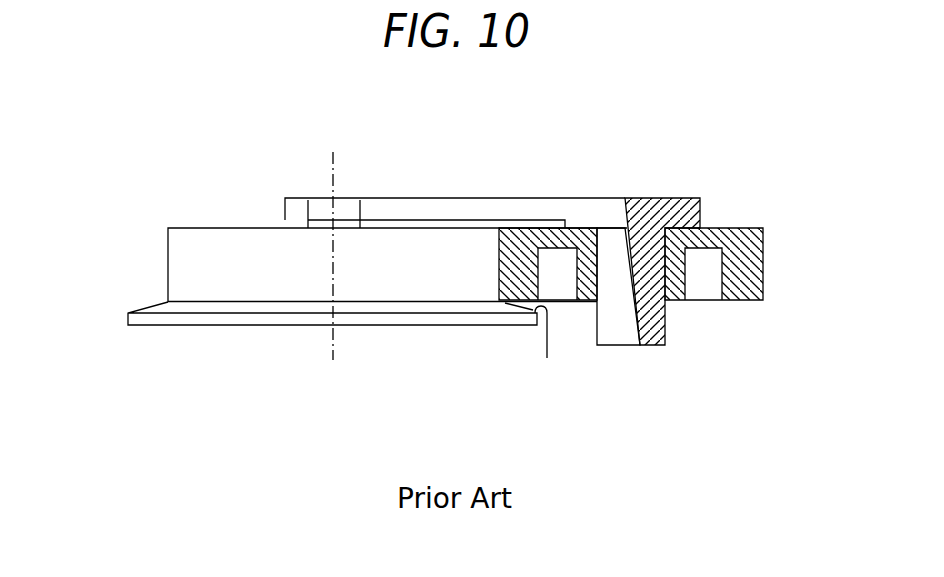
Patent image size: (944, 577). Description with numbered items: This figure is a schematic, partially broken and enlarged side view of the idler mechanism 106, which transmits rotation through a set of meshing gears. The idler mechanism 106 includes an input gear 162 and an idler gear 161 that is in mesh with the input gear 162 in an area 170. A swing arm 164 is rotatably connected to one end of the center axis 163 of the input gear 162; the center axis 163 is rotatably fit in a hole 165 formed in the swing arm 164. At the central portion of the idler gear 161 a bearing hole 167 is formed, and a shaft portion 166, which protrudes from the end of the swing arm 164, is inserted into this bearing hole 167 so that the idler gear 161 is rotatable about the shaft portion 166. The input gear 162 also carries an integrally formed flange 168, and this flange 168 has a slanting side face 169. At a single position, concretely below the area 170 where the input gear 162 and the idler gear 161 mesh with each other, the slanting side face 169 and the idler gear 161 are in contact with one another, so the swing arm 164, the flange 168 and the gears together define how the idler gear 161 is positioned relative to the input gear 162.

The idler mechanism 106 is at (372, 261).
The idler gear 161 is at (763, 262).
The input gear 162 is at (468, 283).
The center axis 163 is at (362, 215).
The swing arm 164 is at (568, 193).
The hole 165 is at (308, 216).
The shaft portion 166 is at (600, 348).
The bearing hole 167 is at (653, 243).
The flange 168 is at (403, 326).
The slanting side face 169 is at (547, 358).
The area 170 is at (508, 243).